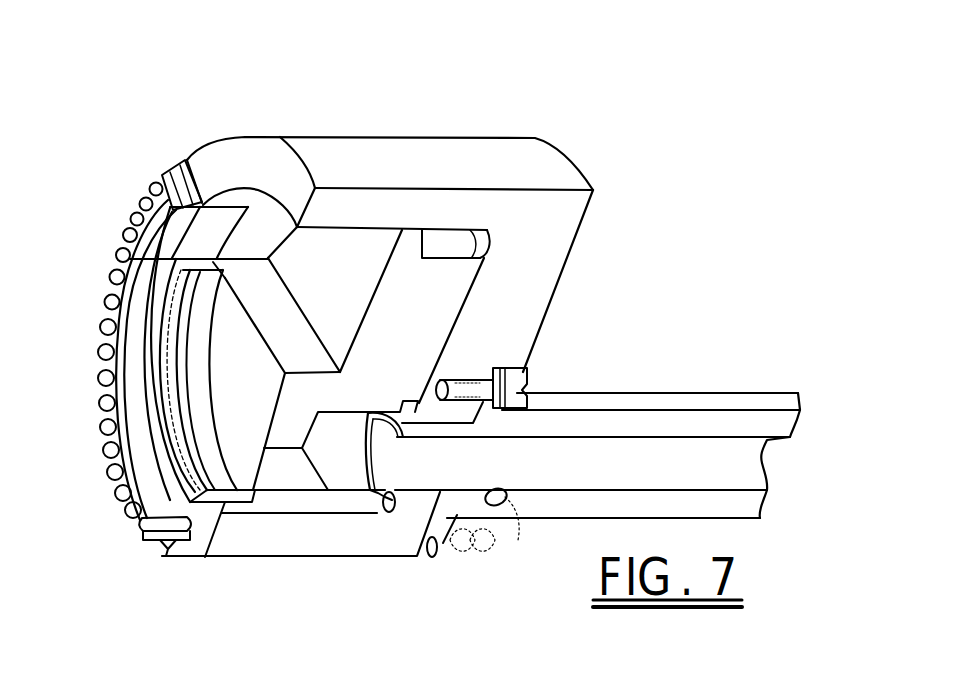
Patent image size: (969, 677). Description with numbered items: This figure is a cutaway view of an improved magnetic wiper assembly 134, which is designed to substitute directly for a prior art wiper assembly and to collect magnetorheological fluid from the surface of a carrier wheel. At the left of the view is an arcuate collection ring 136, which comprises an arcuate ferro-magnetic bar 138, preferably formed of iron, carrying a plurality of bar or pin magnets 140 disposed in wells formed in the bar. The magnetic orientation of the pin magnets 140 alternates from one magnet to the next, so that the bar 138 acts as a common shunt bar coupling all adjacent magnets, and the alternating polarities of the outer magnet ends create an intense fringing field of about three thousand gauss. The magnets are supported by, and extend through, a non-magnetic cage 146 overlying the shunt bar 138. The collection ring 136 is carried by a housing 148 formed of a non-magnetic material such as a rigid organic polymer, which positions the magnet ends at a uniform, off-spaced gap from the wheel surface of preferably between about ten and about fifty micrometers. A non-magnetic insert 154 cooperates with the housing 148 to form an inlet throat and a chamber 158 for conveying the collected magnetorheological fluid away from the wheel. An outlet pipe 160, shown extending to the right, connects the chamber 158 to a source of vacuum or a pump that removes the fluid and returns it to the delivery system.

The magnetic wiper assembly 134 is at (690, 36).
The arcuate collection ring 136 is at (159, 172).
The arcuate ferro-magnetic bar 138 is at (197, 527).
The pin magnets 140 is at (100, 405).
The non-magnetic cage 146 is at (162, 553).
The housing 148 is at (557, 248).
The non-magnetic insert 154 is at (427, 320).
The chamber 158 is at (335, 462).
The outlet pipe 160 is at (660, 422).